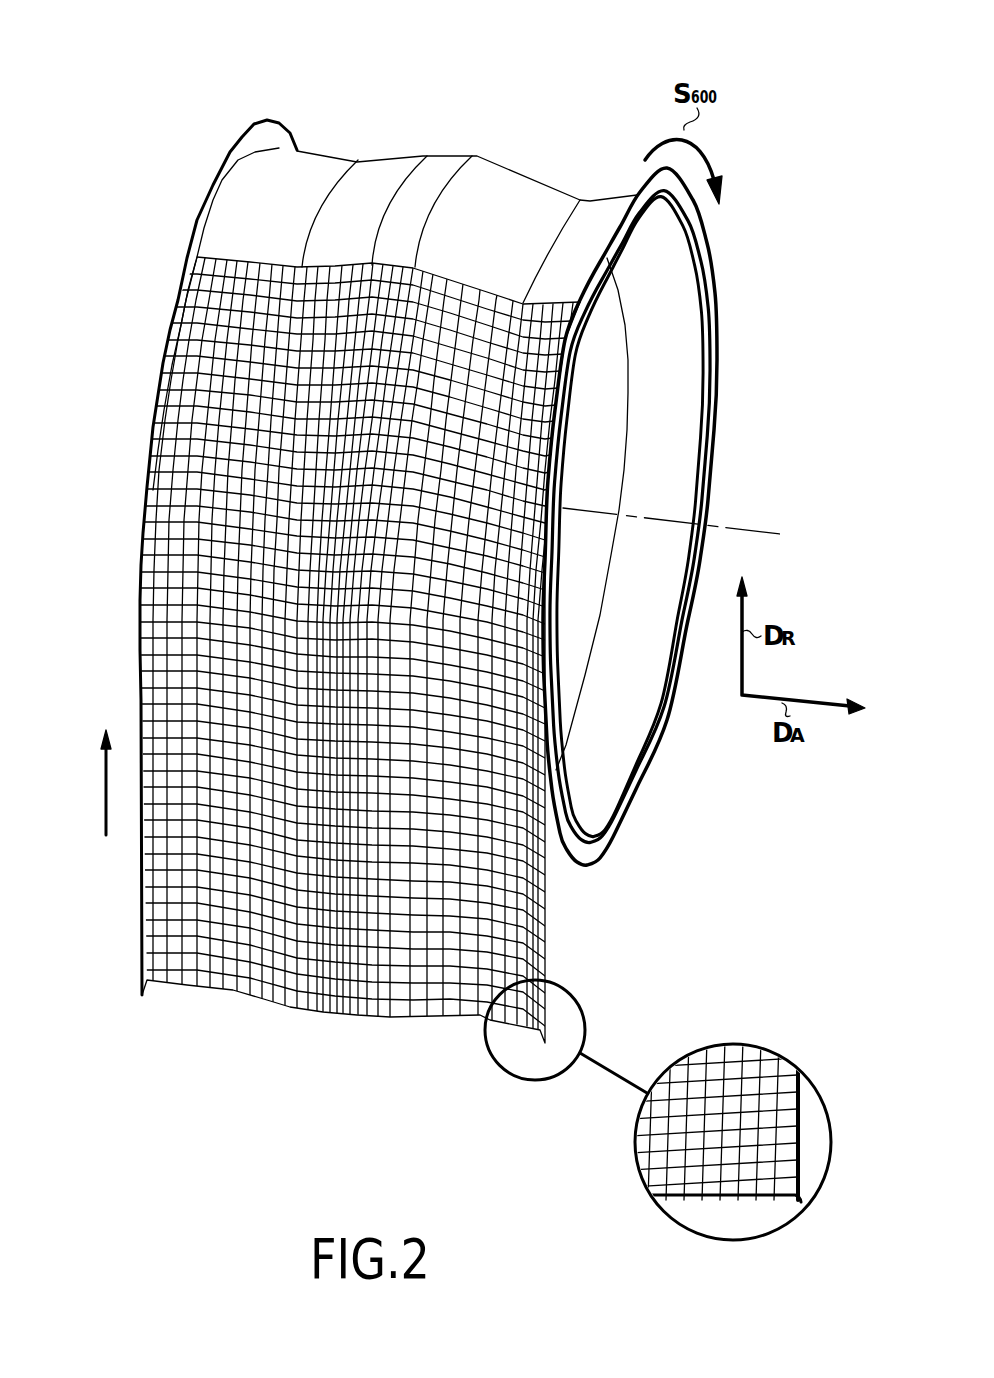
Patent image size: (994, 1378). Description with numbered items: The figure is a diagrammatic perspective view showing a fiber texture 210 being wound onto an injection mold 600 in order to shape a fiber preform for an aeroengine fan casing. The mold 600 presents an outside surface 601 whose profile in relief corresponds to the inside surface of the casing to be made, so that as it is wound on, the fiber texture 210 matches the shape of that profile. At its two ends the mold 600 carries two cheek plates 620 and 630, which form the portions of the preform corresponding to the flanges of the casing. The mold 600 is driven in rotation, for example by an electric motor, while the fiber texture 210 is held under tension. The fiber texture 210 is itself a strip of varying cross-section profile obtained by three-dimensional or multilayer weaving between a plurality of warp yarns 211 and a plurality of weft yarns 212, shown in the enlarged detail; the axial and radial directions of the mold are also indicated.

The injection mold 600 is at (110, 72).
The outside surface 601 is at (388, 162).
The cheek plate 620 is at (266, 131).
The cheek plate 630 is at (650, 187).
The fiber texture 210 is at (106, 914).
The warp yarns 211 is at (747, 1172).
The weft yarns 212 is at (652, 1119).